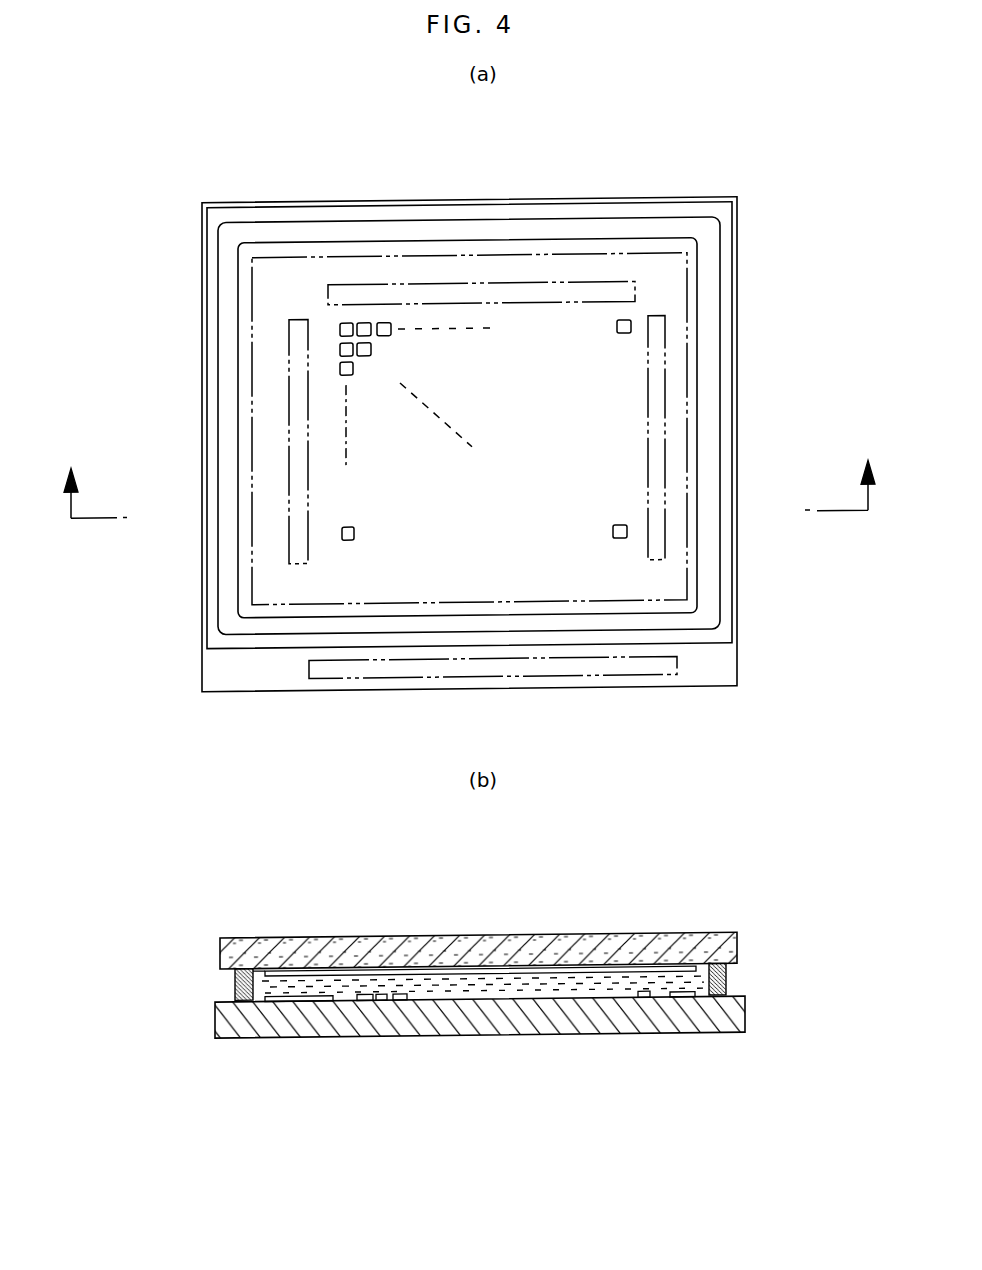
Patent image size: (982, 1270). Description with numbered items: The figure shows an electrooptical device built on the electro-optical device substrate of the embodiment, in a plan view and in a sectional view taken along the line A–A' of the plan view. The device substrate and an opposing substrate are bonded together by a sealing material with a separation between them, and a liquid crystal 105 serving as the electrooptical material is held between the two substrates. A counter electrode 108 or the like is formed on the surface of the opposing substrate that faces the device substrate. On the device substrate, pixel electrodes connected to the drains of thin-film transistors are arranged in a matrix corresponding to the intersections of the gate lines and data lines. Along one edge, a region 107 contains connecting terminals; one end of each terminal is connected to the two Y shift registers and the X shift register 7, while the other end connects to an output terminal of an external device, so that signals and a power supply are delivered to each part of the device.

The X shift register 7 is at (517, 292).
The region 107 is at (476, 686).
The counter electrode 108 is at (387, 976).
The liquid crystal 105 is at (592, 991).